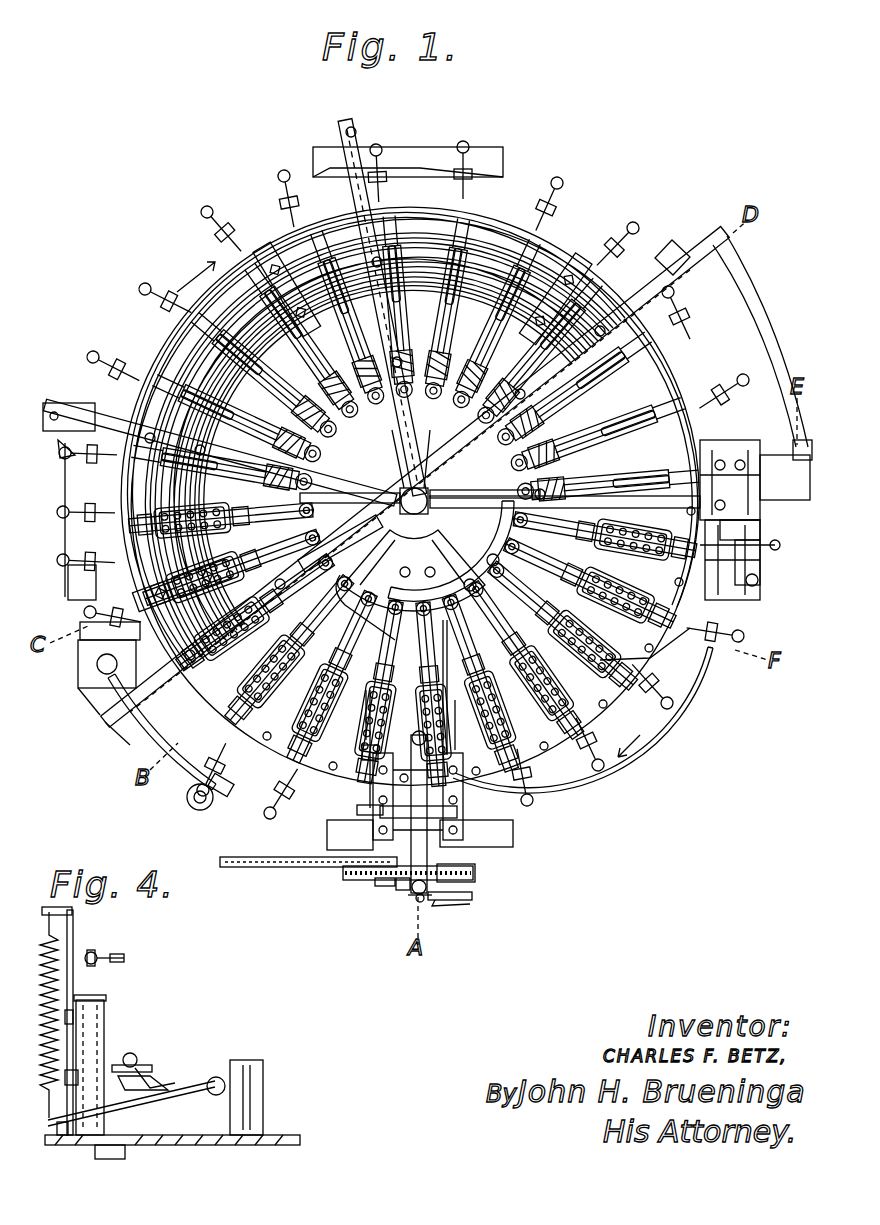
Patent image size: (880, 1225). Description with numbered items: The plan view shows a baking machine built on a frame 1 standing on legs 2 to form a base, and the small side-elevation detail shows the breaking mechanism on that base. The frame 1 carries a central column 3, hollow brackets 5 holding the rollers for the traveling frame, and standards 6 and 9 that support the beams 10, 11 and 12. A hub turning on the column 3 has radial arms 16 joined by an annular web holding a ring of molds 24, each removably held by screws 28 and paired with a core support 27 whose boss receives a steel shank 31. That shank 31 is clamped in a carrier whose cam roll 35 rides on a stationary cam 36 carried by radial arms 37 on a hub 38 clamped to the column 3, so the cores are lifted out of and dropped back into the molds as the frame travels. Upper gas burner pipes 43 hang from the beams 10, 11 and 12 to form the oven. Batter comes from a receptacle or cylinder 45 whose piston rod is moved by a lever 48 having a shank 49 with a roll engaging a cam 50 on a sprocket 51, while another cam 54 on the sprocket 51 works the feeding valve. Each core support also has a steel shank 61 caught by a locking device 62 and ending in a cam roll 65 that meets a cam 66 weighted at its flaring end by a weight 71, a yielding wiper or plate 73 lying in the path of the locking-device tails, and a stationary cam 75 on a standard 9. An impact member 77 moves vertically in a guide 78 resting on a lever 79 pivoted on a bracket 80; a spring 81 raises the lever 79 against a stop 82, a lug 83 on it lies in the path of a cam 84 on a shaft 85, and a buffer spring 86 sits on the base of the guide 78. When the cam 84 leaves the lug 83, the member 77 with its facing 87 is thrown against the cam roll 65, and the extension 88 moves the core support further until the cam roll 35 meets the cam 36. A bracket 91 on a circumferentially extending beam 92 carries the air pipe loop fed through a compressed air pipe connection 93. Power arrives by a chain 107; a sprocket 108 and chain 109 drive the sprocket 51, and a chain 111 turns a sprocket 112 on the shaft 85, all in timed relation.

In FIG. 1, the frame 1 is at (468, 210).
In FIG. 4, the frame 1 is at (180, 1138).
In FIG. 1, the legs 2 is at (500, 150).
In FIG. 1, the central column 3 is at (400, 468).
In FIG. 4, the brackets 5 is at (264, 1095).
In FIG. 1, the standards 6 is at (120, 745).
In FIG. 1, the standards 9 is at (360, 135).
In FIG. 1, the beam 10 is at (712, 237).
In FIG. 1, the beam 11 is at (348, 118).
In FIG. 1, the beam 12 is at (45, 403).
In FIG. 1, the radial arms 16 is at (380, 492).
In FIG. 1, the molds 24 is at (630, 655).
In FIG. 1, the core support 27 is at (620, 585).
In FIG. 1, the screws 28 is at (540, 760).
In FIG. 1, the steel shank 31 is at (600, 420).
In FIG. 1, the cam roll 35 is at (384, 445).
In FIG. 1, the cam 36 is at (428, 580).
In FIG. 1, the radial arms 37 is at (375, 535).
In FIG. 1, the hub 38 is at (455, 500).
In FIG. 1, the upper gas burner pipes 43 is at (225, 362).
In FIG. 1, the receptacle or cylinder 45 is at (367, 797).
In FIG. 1, the lever 48 is at (440, 818).
In FIG. 1, the shank 49 is at (430, 902).
In FIG. 1, the cam 50 is at (455, 898).
In FIG. 1, the sprocket 51 is at (476, 873).
In FIG. 1, the cam 54 is at (385, 880).
In FIG. 1, the steel shank 61 is at (80, 512).
In FIG. 1, the locking device 62 is at (630, 225).
In FIG. 1, the cam roll 65 is at (212, 207).
In FIG. 4, the cam roll 65 is at (93, 950).
In FIG. 1, the cam 66 is at (190, 716).
In FIG. 1, the weight 71 is at (190, 800).
In FIG. 1, the yielding wiper or plate 73 is at (100, 614).
In FIG. 1, the stationary cam 75 is at (668, 243).
In FIG. 4, the impact member 77 is at (103, 1000).
In FIG. 4, the guide 78 is at (100, 1032).
In FIG. 4, the lever 79 is at (182, 1085).
In FIG. 4, the bracket 80 is at (218, 1078).
In FIG. 4, the spring 81 is at (47, 930).
In FIG. 4, the stop 82 is at (85, 1075).
In FIG. 4, the lug 83 is at (150, 1078).
In FIG. 4, the cam 84 is at (130, 1100).
In FIG. 4, the shaft 85 is at (135, 1053).
In FIG. 4, the buffer spring 86 is at (62, 1145).
In FIG. 4, the facing 87 is at (100, 958).
In FIG. 1, the extension 88 is at (760, 510).
In FIG. 1, the bracket 91 is at (705, 652).
In FIG. 1, the circumferentially extending beam 92 is at (650, 760).
In FIG. 1, the compressed air pipe connection 93 is at (775, 545).
In FIG. 1, the chain 107 is at (240, 857).
In FIG. 1, the sprocket 108 is at (345, 872).
In FIG. 1, the chain 109 is at (405, 885).
In FIG. 1, the chain 111 is at (703, 372).
In FIG. 1, the sprocket 112 is at (770, 400).